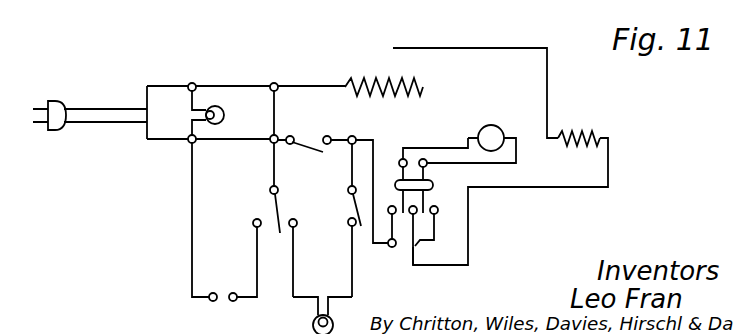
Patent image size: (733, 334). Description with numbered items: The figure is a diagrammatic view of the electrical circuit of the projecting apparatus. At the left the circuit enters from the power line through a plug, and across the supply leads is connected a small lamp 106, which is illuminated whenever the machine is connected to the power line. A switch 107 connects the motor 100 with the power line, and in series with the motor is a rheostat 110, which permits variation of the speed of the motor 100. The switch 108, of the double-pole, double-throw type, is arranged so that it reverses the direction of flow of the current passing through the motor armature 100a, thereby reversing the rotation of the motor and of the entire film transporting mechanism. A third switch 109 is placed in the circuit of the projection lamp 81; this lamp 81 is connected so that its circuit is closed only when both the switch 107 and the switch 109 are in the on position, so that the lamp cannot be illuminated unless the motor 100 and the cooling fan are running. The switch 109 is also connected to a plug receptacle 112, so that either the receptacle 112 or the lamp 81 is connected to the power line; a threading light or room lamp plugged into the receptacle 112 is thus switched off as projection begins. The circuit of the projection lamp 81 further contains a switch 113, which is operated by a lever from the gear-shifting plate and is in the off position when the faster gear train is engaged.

The small lamp 106 is at (231, 106).
The switch 107 is at (310, 137).
The rheostat 110 is at (393, 48).
The motor 100 is at (587, 131).
The motor armature 100a is at (505, 121).
The switch 108 is at (425, 212).
The switch 113 is at (356, 203).
The third switch 109 is at (284, 202).
The plug receptacle 112 is at (235, 272).
The projection lamp 81 is at (327, 315).